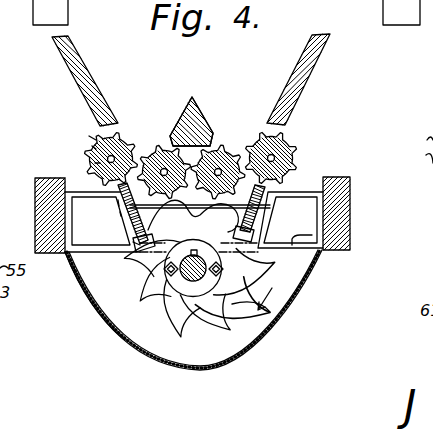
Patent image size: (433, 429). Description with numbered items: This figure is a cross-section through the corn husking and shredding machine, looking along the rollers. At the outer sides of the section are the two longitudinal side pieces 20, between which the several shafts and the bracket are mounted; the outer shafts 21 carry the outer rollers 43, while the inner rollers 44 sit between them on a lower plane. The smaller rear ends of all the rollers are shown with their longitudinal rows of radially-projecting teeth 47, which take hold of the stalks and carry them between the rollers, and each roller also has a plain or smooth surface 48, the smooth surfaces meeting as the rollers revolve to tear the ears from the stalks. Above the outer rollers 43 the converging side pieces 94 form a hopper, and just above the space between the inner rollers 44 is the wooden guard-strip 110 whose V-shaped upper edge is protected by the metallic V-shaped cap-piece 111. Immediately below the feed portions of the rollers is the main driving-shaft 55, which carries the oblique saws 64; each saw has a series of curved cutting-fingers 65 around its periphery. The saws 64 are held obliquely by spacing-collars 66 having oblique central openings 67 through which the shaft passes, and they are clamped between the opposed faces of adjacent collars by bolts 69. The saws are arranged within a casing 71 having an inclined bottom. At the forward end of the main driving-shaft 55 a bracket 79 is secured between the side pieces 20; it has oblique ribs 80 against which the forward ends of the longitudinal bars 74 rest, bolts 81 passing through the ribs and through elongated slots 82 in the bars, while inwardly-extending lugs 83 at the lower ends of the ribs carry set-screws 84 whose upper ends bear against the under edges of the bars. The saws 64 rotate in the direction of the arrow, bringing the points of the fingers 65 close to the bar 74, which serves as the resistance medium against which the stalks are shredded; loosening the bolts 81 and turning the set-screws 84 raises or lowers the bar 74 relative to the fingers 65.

The longitudinal side pieces 20 is at (36, 218).
The outer shafts 21 is at (95, 163).
The outer rollers 43 is at (96, 137).
The inner rollers 44 is at (147, 139).
The radially-projecting teeth 47 is at (91, 146).
The plain or smooth surface 48 is at (114, 183).
The main driving-shaft 55 is at (188, 276).
The saws 64 is at (184, 334).
The curved cutting-fingers 65 is at (142, 262).
The spacing-collars 66 is at (248, 333).
The oblique central openings 67 is at (193, 281).
The bolts 69 is at (167, 271).
The casing 71 is at (292, 302).
The longitudinal bar 74 is at (125, 212).
The bracket 79 is at (300, 238).
The oblique ribs 80 is at (37, 195).
The bolts 81 is at (118, 201).
The elongated slots 82 is at (120, 212).
The inwardly-extending lugs 83 is at (133, 242).
The set-screws 84 is at (143, 255).
The side pieces of hopper 94 is at (74, 78).
The guard-strip 110 is at (201, 116).
The metallic V-shaped cap-piece 111 is at (183, 106).